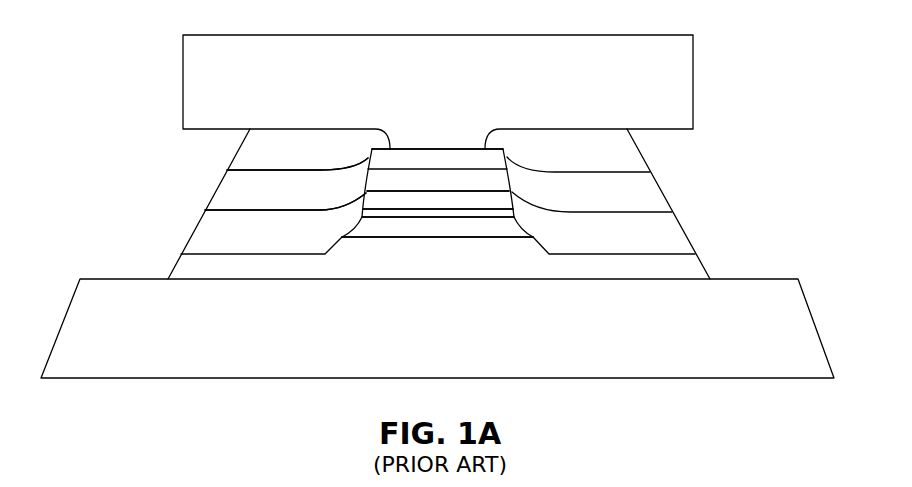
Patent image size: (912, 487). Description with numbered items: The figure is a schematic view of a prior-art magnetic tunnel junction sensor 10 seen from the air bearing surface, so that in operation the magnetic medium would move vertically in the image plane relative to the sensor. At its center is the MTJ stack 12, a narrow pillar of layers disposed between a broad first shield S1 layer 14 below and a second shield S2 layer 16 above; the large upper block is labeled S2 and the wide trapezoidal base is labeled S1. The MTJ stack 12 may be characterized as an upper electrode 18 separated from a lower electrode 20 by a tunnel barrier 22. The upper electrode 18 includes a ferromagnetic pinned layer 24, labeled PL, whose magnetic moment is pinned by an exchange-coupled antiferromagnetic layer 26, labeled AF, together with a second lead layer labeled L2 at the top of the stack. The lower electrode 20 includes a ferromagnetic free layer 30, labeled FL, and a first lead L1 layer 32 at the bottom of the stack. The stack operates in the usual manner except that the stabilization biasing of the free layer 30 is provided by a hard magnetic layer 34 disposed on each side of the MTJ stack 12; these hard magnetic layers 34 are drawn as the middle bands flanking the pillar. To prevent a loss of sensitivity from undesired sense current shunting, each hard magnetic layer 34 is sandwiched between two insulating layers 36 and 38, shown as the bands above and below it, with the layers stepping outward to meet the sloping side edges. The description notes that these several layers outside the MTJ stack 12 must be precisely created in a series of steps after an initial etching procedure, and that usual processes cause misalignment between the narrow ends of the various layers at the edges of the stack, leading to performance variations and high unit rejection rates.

The magnetic tunnel junction sensor 10 is at (742, 53).
The MTJ stack 12 is at (505, 122).
The first shield (S1) layer 14 is at (754, 366).
The second shield (S2) layer 16 is at (192, 55).
The upper electrode 18 is at (238, 132).
The lower electrode 20 is at (190, 212).
The tunnel barrier 22 is at (390, 216).
The ferromagnetic pinned layer 24 is at (367, 198).
The antiferromagnetic layer 26 is at (395, 173).
The ferromagnetic free layer 30 is at (362, 219).
The first lead (L1) layer 32 is at (533, 270).
The hard magnetic layer 34 is at (232, 203).
The insulating layer 36 is at (259, 162).
The insulating layer 38 is at (214, 245).
The first shield S1 is at (438, 332).
The second shield S2 is at (437, 58).
The first lead L1 is at (437, 255).
The second lead L2 is at (504, 155).
The antiferromagnetic layer AF is at (510, 178).
The pinned layer PL is at (512, 213).
The free layer FL is at (488, 230).